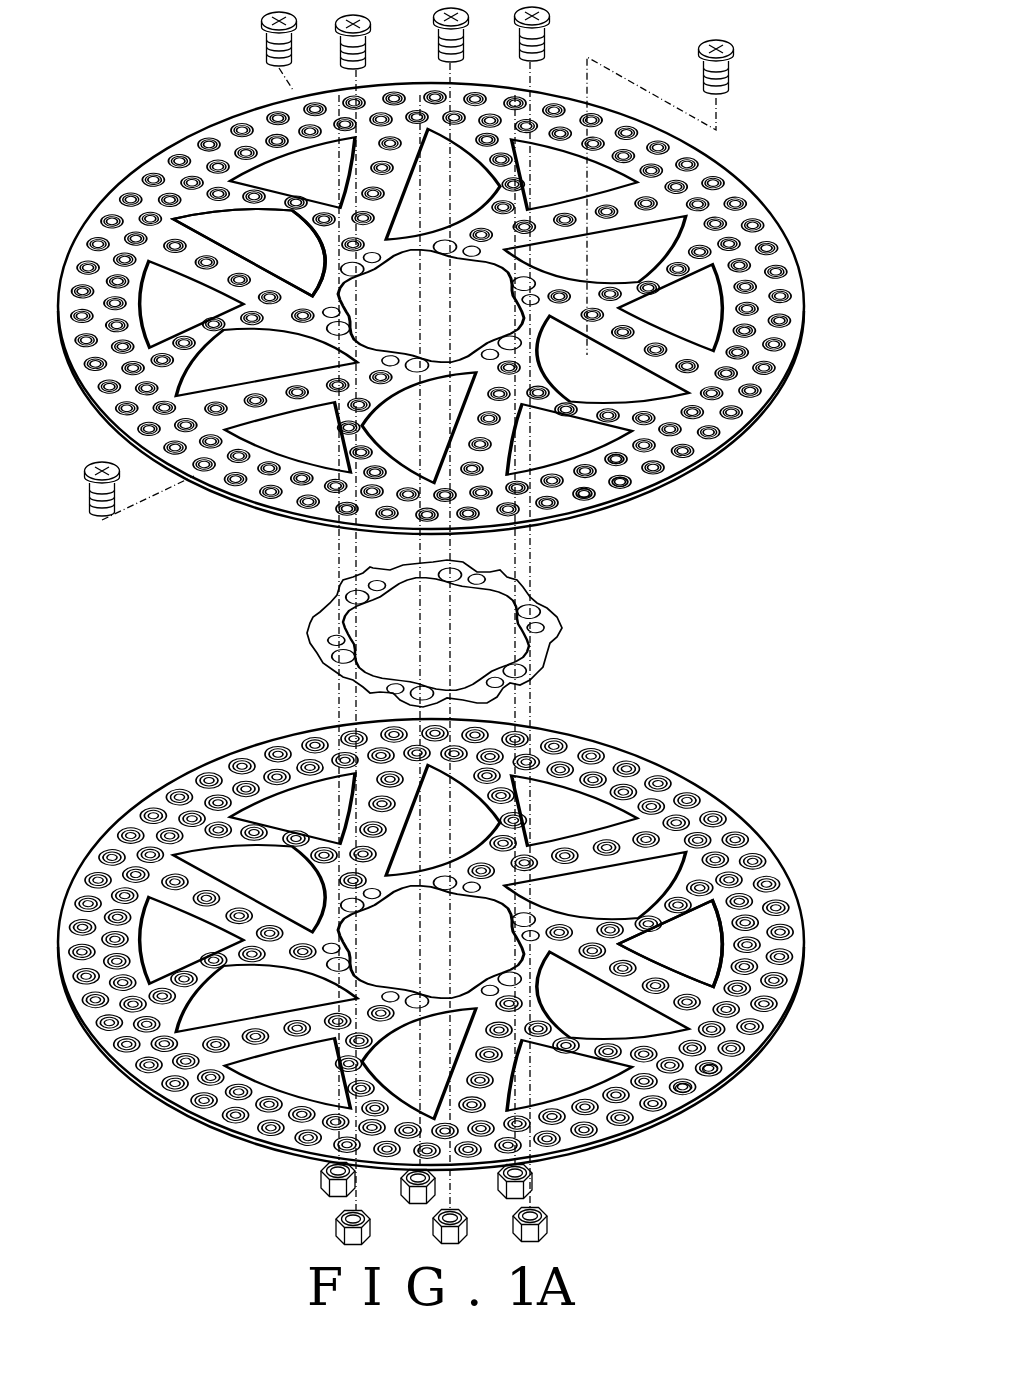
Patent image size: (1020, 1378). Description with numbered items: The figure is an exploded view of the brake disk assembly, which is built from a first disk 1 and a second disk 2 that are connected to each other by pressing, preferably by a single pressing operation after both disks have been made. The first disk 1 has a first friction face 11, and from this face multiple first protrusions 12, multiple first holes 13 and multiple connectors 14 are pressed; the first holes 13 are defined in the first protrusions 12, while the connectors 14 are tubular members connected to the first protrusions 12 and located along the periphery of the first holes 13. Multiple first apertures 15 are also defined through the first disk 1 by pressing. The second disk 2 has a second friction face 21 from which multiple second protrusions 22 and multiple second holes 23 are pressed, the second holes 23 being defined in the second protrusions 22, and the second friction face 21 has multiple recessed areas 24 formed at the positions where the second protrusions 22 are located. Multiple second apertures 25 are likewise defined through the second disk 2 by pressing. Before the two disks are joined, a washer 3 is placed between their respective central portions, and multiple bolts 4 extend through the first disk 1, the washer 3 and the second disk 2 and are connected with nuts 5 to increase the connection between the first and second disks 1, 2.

The first disk 1 is at (431, 942).
The second disk 2 is at (431, 328).
The washer 3 is at (560, 650).
The bolts 4 is at (735, 77).
The nuts 5 is at (548, 1228).
The first friction face 11 is at (775, 1027).
The first protrusions 12 is at (725, 1075).
The first holes 13 is at (737, 1070).
The connectors 14 is at (715, 1065).
The first apertures 15 is at (700, 937).
The second friction face 21 is at (681, 465).
The second protrusions 22 is at (628, 480).
The second holes 23 is at (620, 492).
The recessed areas 24 is at (643, 482).
The second apertures 25 is at (165, 285).